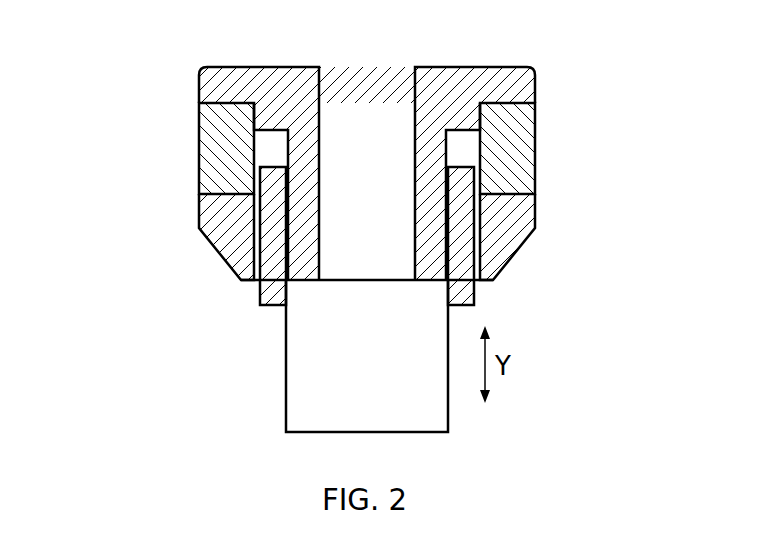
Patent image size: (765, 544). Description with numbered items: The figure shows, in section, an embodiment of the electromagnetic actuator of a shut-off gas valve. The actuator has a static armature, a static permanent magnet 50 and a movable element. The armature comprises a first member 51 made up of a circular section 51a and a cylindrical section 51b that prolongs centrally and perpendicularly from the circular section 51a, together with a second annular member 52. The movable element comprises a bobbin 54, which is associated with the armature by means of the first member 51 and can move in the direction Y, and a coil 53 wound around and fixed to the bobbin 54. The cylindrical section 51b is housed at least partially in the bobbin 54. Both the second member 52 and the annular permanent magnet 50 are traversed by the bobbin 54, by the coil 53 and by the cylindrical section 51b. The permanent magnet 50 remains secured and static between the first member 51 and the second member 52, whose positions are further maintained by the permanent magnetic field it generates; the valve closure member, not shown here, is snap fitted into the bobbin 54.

The permanent magnet 50 is at (215, 128).
The first member 51 is at (365, 173).
The circular section 51a is at (508, 94).
The cylindrical section 51b is at (488, 173).
The second annular member 52 is at (495, 243).
The coil 53 is at (270, 228).
The bobbin 54 is at (285, 393).